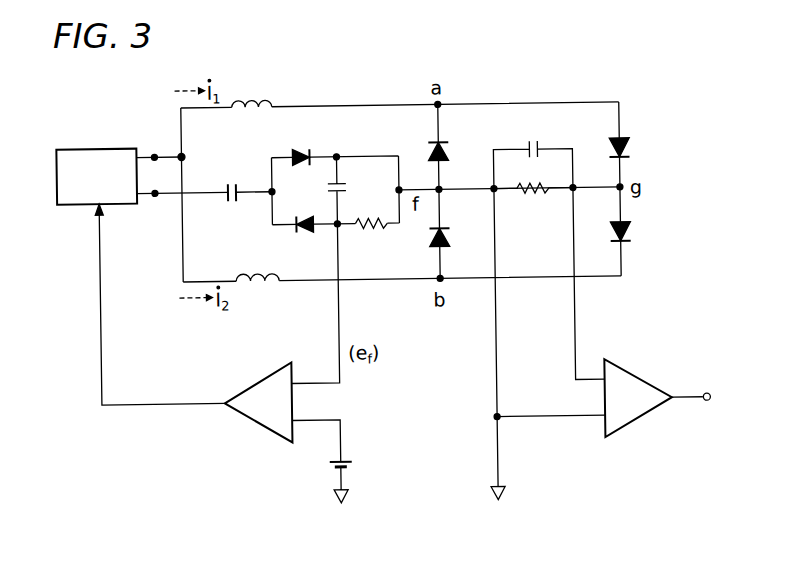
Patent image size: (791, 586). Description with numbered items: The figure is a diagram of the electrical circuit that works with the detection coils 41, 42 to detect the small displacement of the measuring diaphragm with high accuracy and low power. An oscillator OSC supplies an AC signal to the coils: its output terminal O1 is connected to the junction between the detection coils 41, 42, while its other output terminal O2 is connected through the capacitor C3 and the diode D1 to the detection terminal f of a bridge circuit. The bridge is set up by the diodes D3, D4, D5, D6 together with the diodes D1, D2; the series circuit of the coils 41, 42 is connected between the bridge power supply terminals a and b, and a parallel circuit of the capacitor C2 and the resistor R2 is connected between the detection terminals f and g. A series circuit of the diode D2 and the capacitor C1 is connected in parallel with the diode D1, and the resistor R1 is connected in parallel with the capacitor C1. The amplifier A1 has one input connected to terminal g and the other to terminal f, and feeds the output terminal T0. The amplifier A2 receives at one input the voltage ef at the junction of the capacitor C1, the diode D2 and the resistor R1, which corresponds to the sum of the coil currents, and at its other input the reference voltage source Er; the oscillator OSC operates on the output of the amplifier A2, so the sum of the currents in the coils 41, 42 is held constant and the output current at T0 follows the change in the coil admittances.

The detection coil 41 is at (251, 104).
The detection coil 42 is at (255, 304).
The oscillator OSC is at (96, 177).
The output terminal of the oscillator O1 is at (160, 144).
The output terminal of the oscillator O2 is at (183, 208).
The capacitor C1 is at (340, 185).
The capacitor C2 is at (539, 145).
The capacitor C3 is at (231, 203).
The diode D1 is at (305, 149).
The diode D2 is at (302, 234).
The diode D3 is at (448, 157).
The diode D4 is at (448, 245).
The diode D5 is at (628, 149).
The diode D6 is at (630, 237).
The resistor R1 is at (371, 239).
The resistor R2 is at (534, 206).
The amplifier A1 is at (640, 437).
The amplifier A2 is at (262, 444).
The reference voltage source Er is at (349, 467).
The output terminal T0 is at (704, 399).